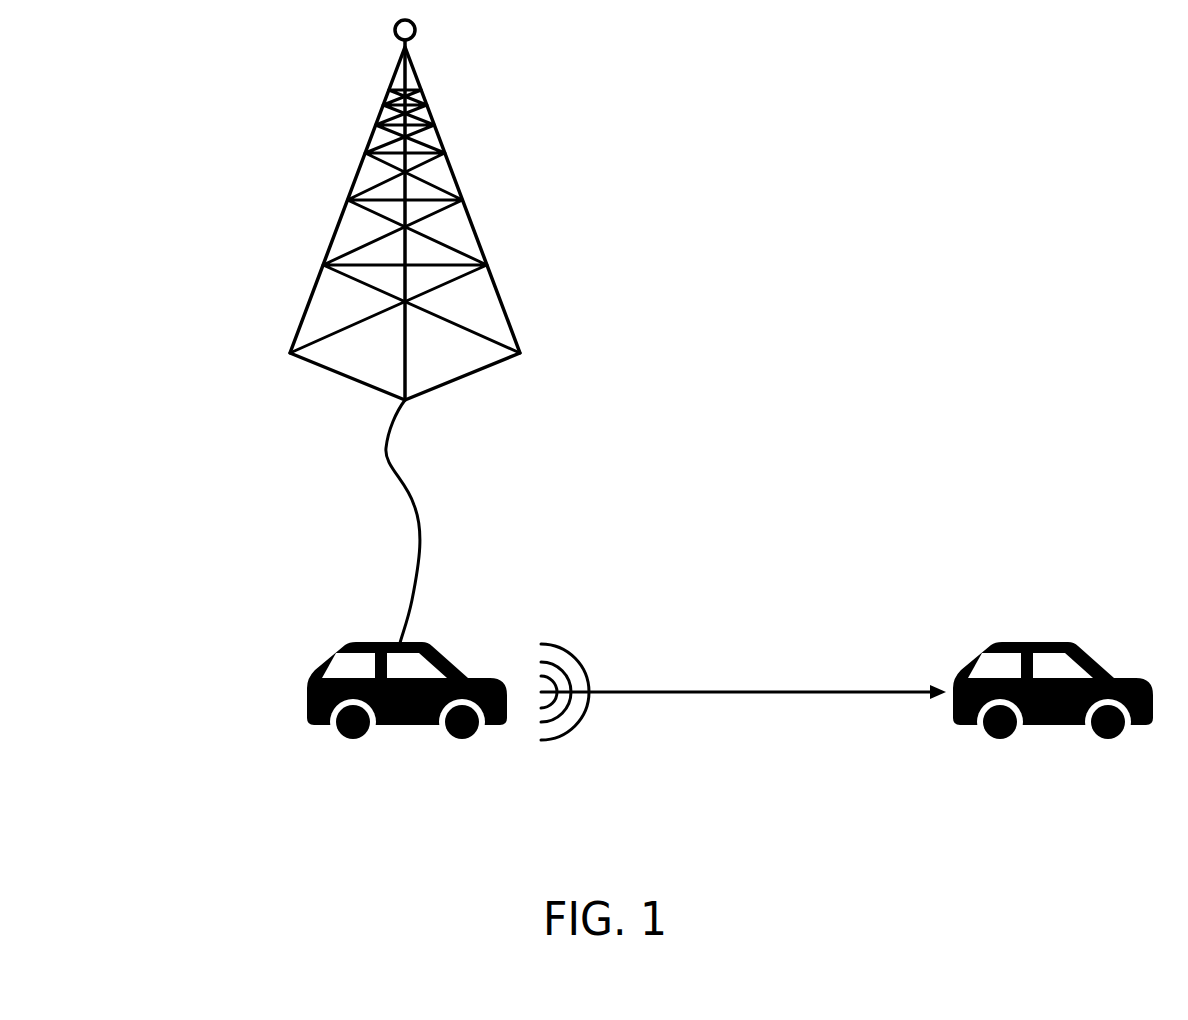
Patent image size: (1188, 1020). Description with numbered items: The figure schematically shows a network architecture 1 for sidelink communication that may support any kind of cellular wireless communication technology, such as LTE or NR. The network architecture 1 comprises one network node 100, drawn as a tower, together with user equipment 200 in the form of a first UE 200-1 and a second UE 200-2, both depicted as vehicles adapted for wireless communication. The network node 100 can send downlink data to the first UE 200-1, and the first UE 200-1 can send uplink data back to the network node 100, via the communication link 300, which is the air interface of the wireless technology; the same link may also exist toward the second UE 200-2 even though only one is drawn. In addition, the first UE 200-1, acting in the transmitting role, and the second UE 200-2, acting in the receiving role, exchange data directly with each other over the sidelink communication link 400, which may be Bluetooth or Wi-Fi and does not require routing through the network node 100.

The network architecture 1 is at (683, 152).
The network node 100 is at (357, 122).
The user equipment 200 is at (983, 345).
The first UE 200-1 is at (337, 635).
The second UE 200-2 is at (1008, 633).
The communication link 300 is at (395, 488).
The sidelink communication link 400 is at (680, 677).